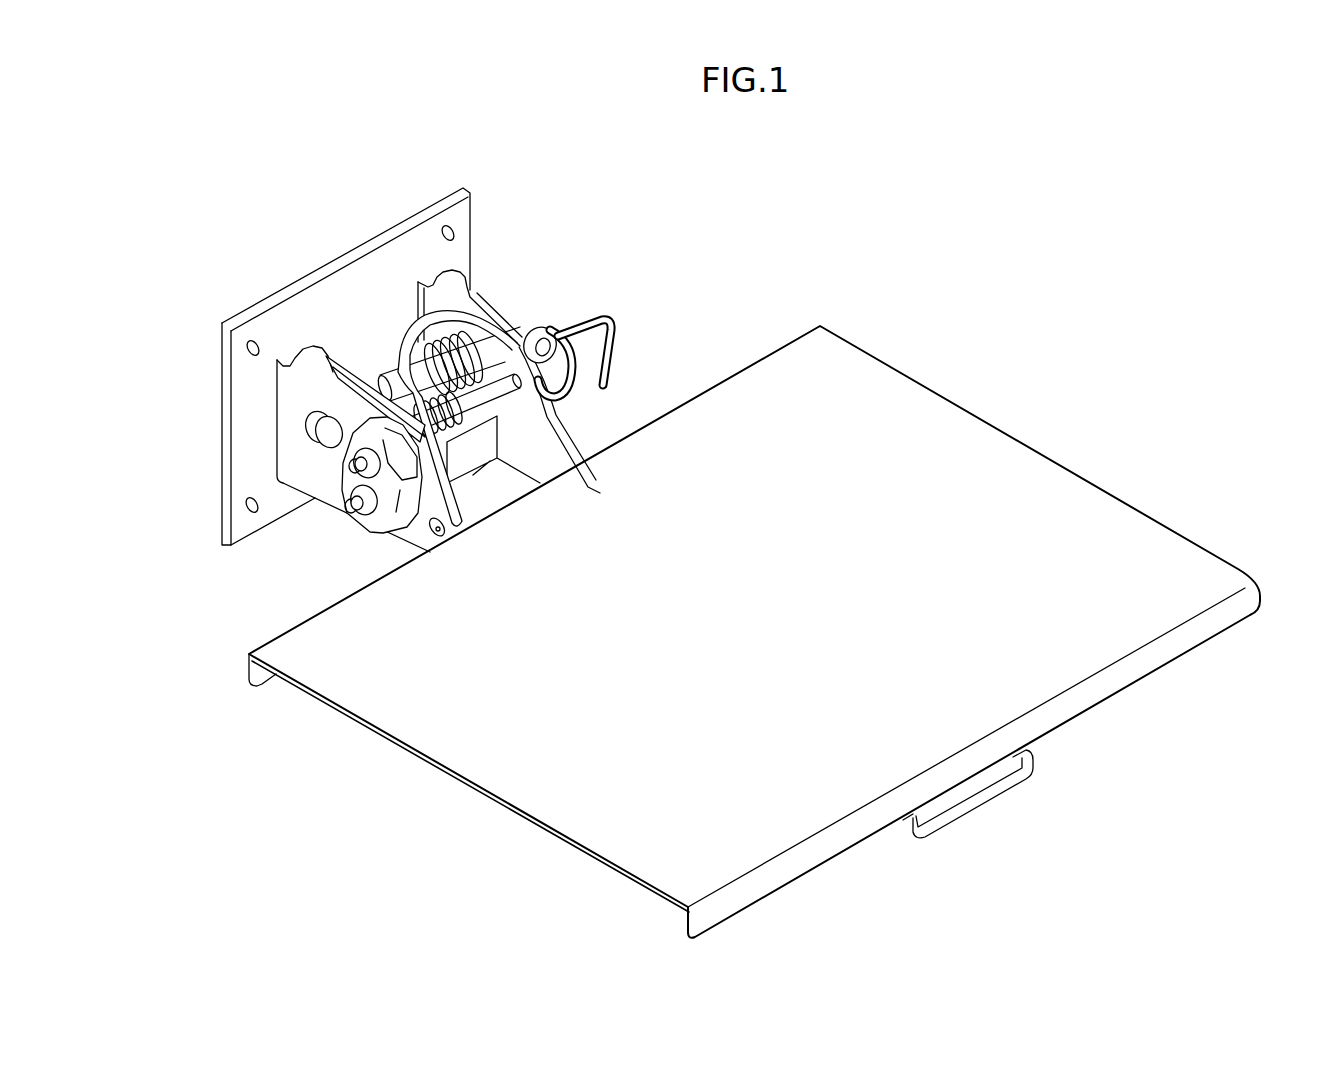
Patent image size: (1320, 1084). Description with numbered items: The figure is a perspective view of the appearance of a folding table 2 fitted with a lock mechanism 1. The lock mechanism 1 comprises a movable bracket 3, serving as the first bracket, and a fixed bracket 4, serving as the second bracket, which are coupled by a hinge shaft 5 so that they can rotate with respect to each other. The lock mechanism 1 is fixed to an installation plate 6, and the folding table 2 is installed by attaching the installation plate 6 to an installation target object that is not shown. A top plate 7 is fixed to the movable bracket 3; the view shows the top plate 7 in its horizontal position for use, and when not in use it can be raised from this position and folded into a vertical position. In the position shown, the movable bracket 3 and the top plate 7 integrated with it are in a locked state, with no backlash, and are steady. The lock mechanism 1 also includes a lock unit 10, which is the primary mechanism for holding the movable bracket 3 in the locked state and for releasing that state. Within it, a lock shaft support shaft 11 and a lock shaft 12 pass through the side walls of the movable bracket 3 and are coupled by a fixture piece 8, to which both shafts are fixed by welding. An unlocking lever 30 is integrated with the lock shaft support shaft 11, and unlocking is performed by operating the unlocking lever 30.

The lock mechanism 1 is at (430, 402).
The folding table 2 is at (754, 595).
The movable bracket 3 is at (374, 461).
The fixed bracket 4 is at (318, 505).
The hinge shaft 5 is at (385, 378).
The installation plate 6 is at (245, 318).
The top plate 7 is at (1078, 494).
The fixture piece 8 is at (281, 514).
The lock unit 10 is at (387, 348).
The lock shaft support shaft 11 is at (352, 462).
The lock shaft 12 is at (352, 503).
The unlocking lever 30 is at (618, 357).